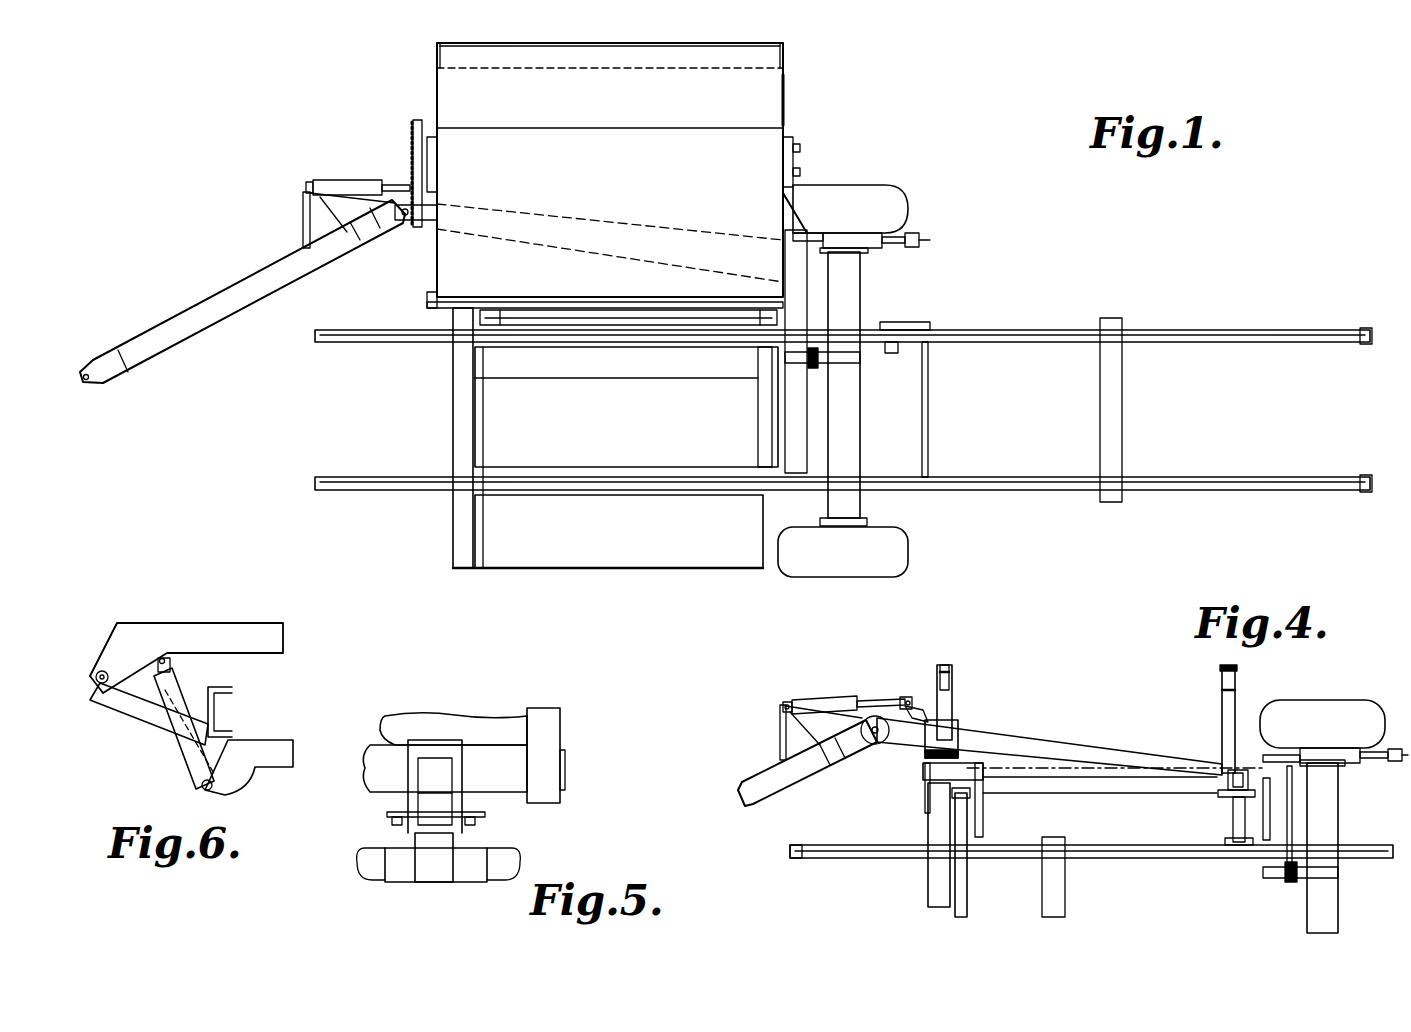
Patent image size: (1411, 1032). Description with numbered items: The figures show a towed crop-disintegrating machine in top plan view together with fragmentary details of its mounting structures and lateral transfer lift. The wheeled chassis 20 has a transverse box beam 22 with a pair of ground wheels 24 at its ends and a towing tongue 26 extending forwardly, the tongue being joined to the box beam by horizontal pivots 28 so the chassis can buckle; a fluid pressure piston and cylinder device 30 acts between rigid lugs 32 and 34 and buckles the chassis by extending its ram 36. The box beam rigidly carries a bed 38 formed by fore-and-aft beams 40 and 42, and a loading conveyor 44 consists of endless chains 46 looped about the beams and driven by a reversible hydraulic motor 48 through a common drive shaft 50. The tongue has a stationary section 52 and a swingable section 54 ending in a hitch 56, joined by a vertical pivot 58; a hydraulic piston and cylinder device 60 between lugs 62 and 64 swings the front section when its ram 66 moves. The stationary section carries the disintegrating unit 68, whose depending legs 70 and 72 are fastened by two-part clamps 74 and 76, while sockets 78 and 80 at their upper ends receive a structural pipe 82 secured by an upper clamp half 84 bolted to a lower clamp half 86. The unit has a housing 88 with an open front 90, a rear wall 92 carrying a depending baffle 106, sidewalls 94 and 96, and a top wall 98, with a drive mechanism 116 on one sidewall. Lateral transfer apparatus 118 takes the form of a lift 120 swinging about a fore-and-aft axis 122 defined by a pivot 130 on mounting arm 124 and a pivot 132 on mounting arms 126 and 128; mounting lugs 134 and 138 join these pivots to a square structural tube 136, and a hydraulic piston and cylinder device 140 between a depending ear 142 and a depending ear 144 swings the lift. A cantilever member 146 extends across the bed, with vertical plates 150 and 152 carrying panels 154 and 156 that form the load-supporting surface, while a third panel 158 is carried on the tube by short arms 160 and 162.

In FIG. 1, the wheeled chassis 20 is at (862, 300).
In FIG. 4, the wheeled chassis 20 is at (1305, 923).
In FIG. 1, the transverse box beam 22 is at (850, 434).
In FIG. 4, the transverse box beam 22 is at (1338, 830).
In FIG. 1, the ground wheels 24 is at (895, 185).
In FIG. 4, the ground wheels 24 is at (1308, 700).
In FIG. 1, the towing tongue 26 is at (164, 310).
In FIG. 4, the towing tongue 26 is at (742, 778).
In FIG. 1, the horizontal pivots 28 is at (800, 283).
In FIG. 4, the horizontal pivots 28 is at (1285, 890).
In FIG. 1, the fluid pressure piston and cylinder device 30 is at (856, 232).
In FIG. 4, the fluid pressure piston and cylinder device 30 is at (1325, 747).
In FIG. 1, the rigid lug 32 is at (800, 238).
In FIG. 4, the rigid lug 32 is at (1280, 755).
In FIG. 1, the rigid lug 34 is at (930, 240).
In FIG. 1, the ram 36 is at (890, 248).
In FIG. 1, the bed 38 is at (1040, 320).
In FIG. 1, the beam 40 is at (1178, 328).
In FIG. 6, the beam 40 is at (232, 700).
In FIG. 4, the beam 40 is at (1128, 858).
In FIG. 1, the beam 42 is at (1178, 490).
In FIG. 1, the loading conveyor 44 is at (1352, 325).
In FIG. 1, the endless chains 46 is at (1268, 342).
In FIG. 4, the endless chains 46 is at (820, 858).
In FIG. 1, the reversible hydraulic motor 48 is at (890, 353).
In FIG. 1, the drive shaft 50 is at (930, 372).
In FIG. 1, the stationary section 52 is at (620, 222).
In FIG. 5, the stationary section 52 is at (367, 870).
In FIG. 4, the stationary section 52 is at (1045, 737).
In FIG. 1, the swingable section 54 is at (206, 322).
In FIG. 4, the swingable section 54 is at (758, 800).
In FIG. 1, the hitch 56 is at (92, 383).
In FIG. 4, the vertical pivot 58 is at (875, 738).
In FIG. 1, the hydraulic piston and cylinder device 60 is at (318, 180).
In FIG. 4, the hydraulic piston and cylinder device 60 is at (803, 697).
In FIG. 4, the lug 62 is at (923, 710).
In FIG. 1, the lug 64 is at (303, 230).
In FIG. 4, the lug 64 is at (780, 735).
In FIG. 1, the ram 66 is at (386, 183).
In FIG. 4, the ram 66 is at (870, 697).
In FIG. 1, the disintegrating unit 68 is at (800, 95).
In FIG. 5, the disintegrating unit 68 is at (530, 708).
In FIG. 4, the depending leg 70 is at (1238, 695).
In FIG. 5, the depending leg 72 is at (440, 872).
In FIG. 4, the depending leg 72 is at (955, 690).
In FIG. 4, the two-part clamp 74 is at (1225, 770).
In FIG. 5, the two-part clamp 76 is at (403, 880).
In FIG. 4, the two-part clamp 76 is at (950, 725).
In FIG. 4, the socket 78 is at (1225, 677).
In FIG. 5, the socket 80 is at (442, 768).
In FIG. 4, the socket 80 is at (945, 675).
In FIG. 5, the structural pipe 82 is at (512, 790).
In FIG. 5, the upper clamp half 84 is at (398, 745).
In FIG. 5, the lower clamp half 86 is at (460, 832).
In FIG. 1, the housing 88 is at (786, 67).
In FIG. 1, the open front 90 is at (540, 330).
In FIG. 1, the rear wall 92 is at (663, 66).
In FIG. 1, the sidewall 94 is at (792, 130).
In FIG. 1, the sidewall 96 is at (432, 120).
In FIG. 1, the top wall 98 is at (610, 170).
In FIG. 1, the baffle 106 is at (573, 50).
In FIG. 1, the drive mechanism 116 is at (410, 128).
In FIG. 1, the lateral transfer apparatus 118 is at (445, 518).
In FIG. 1, the lift 120 is at (560, 575).
In FIG. 6, the swinging axis 122 is at (92, 687).
In FIG. 4, the swinging axis 122 is at (1115, 757).
In FIG. 1, the mounting arm 124 is at (755, 335).
In FIG. 4, the mounting arm 124 is at (1233, 830).
In FIG. 1, the mounting arm 126 is at (497, 312).
In FIG. 4, the mounting arm 126 is at (975, 818).
In FIG. 6, the mounting arm 128 is at (135, 710).
In FIG. 4, the mounting arm 128 is at (922, 775).
In FIG. 4, the pivot 130 is at (1240, 768).
In FIG. 6, the pivot 132 is at (98, 668).
In FIG. 4, the pivot 132 is at (968, 765).
In FIG. 4, the mounting lugs 134 is at (1228, 792).
In FIG. 4, the square structural tube 136 is at (1120, 793).
In FIG. 4, the mounting lugs 138 is at (926, 790).
In FIG. 6, the hydraulic piston and cylinder device 140 is at (185, 757).
In FIG. 4, the hydraulic piston and cylinder device 140 is at (968, 858).
In FIG. 6, the depending ear 142 is at (238, 780).
In FIG. 6, the depending ear 144 is at (175, 658).
In FIG. 4, the depending ear 144 is at (930, 808).
In FIG. 1, the cantilever member 146 is at (453, 412).
In FIG. 6, the cantilever member 146 is at (282, 640).
In FIG. 4, the cantilever member 146 is at (935, 905).
In FIG. 1, the vertical plate 150 is at (483, 532).
In FIG. 1, the vertical plate 152 is at (483, 440).
In FIG. 1, the panel 154 is at (615, 562).
In FIG. 1, the panel 156 is at (770, 441).
In FIG. 1, the third panel 158 is at (618, 330).
In FIG. 4, the short arm 160 is at (1263, 820).
In FIG. 4, the short arm 162 is at (1100, 805).